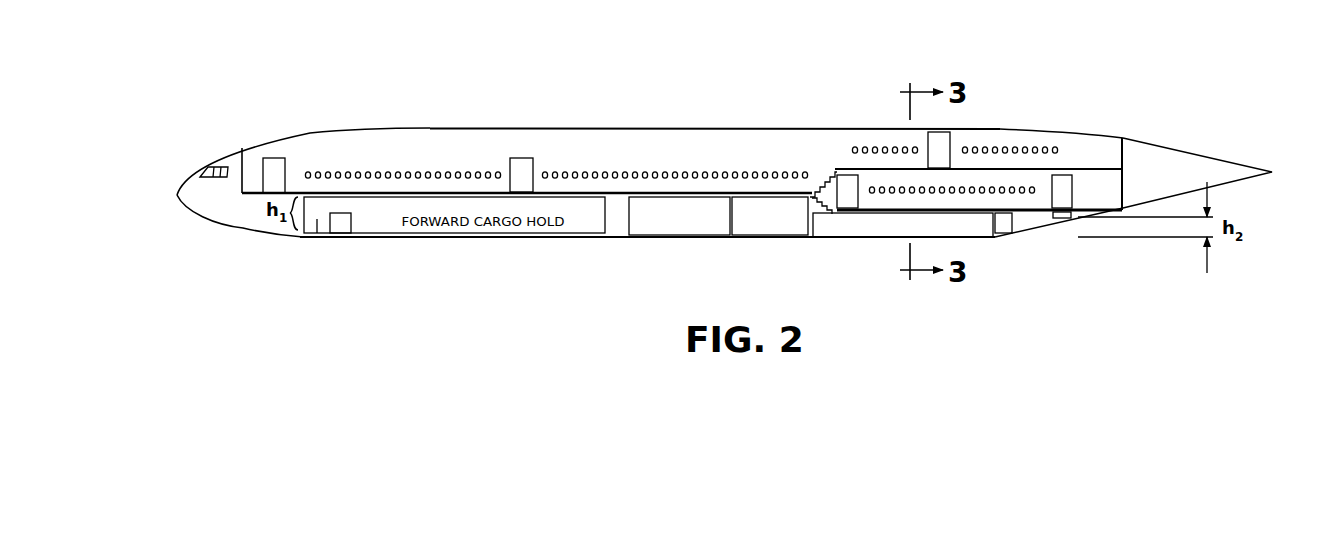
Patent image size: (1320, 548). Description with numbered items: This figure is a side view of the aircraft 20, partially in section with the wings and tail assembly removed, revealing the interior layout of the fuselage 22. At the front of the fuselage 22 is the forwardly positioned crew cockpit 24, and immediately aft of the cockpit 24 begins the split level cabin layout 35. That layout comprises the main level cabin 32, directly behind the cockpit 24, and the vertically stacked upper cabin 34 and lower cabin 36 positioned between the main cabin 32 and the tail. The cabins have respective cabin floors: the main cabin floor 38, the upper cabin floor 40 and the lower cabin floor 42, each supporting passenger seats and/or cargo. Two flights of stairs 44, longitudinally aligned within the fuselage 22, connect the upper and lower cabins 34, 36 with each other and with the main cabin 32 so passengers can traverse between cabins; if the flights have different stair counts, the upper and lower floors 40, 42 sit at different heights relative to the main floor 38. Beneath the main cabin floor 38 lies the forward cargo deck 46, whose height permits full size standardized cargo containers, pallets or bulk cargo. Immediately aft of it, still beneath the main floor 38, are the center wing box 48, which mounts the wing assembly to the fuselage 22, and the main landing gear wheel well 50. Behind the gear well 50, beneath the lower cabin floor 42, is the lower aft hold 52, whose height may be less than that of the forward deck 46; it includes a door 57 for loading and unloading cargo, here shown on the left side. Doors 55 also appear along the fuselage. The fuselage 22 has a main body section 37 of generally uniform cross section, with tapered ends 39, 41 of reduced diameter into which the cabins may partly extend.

The aircraft 20 is at (202, 130).
The fuselage 22 is at (433, 127).
The crew cockpit 24 is at (218, 160).
The main level cabin 32 is at (390, 147).
The upper cabin 34 is at (1088, 136).
The split level cabin layout 35 is at (707, 117).
The lower cabin 36 is at (880, 179).
The main body section 37 is at (658, 116).
The main cabin floor 38 is at (617, 192).
The forward tapered section 39 is at (205, 226).
The upper cabin floor 40 is at (989, 169).
The aft tapered section 41 is at (1154, 116).
The lower cabin floor 42 is at (996, 233).
The flights of stairs 44 is at (827, 177).
The forward cargo deck 46 is at (317, 222).
The center wing box 48 is at (632, 218).
The main landing gear wheel well 50 is at (797, 220).
The lower aft hold 52 is at (873, 236).
The passenger door 55 is at (275, 160).
The door 57 is at (340, 218).